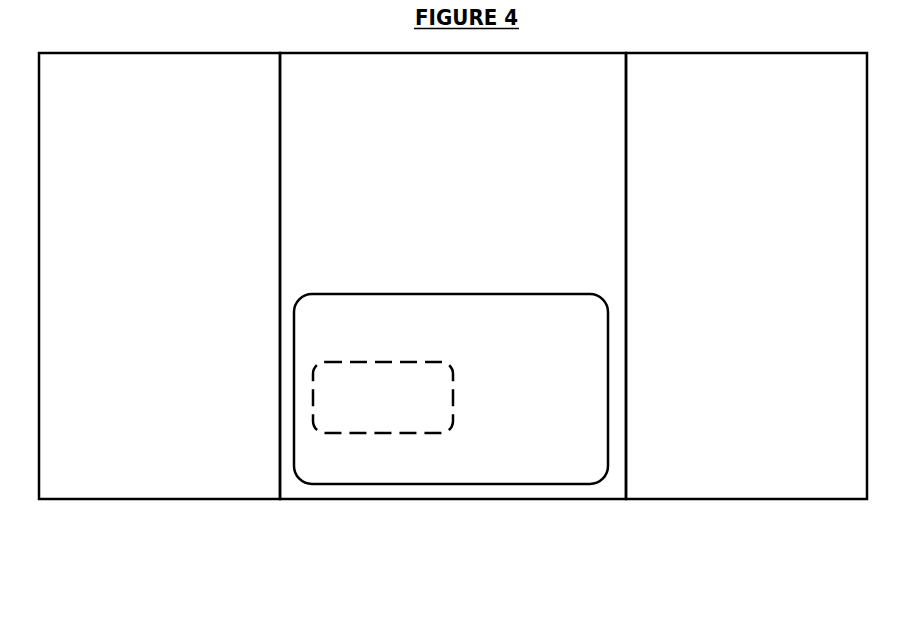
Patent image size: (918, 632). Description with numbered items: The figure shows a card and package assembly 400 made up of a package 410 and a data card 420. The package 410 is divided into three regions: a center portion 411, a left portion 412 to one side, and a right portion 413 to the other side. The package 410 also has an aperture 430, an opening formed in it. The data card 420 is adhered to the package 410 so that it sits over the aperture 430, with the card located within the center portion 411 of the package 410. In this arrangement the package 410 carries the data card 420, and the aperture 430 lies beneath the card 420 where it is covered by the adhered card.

The card and package assembly 400 is at (145, 548).
The package 410 is at (230, 501).
The center portion 411 is at (340, 98).
The left portion 412 is at (98, 98).
The right portion 413 is at (678, 98).
The data card 420 is at (574, 486).
The aperture 430 is at (362, 436).